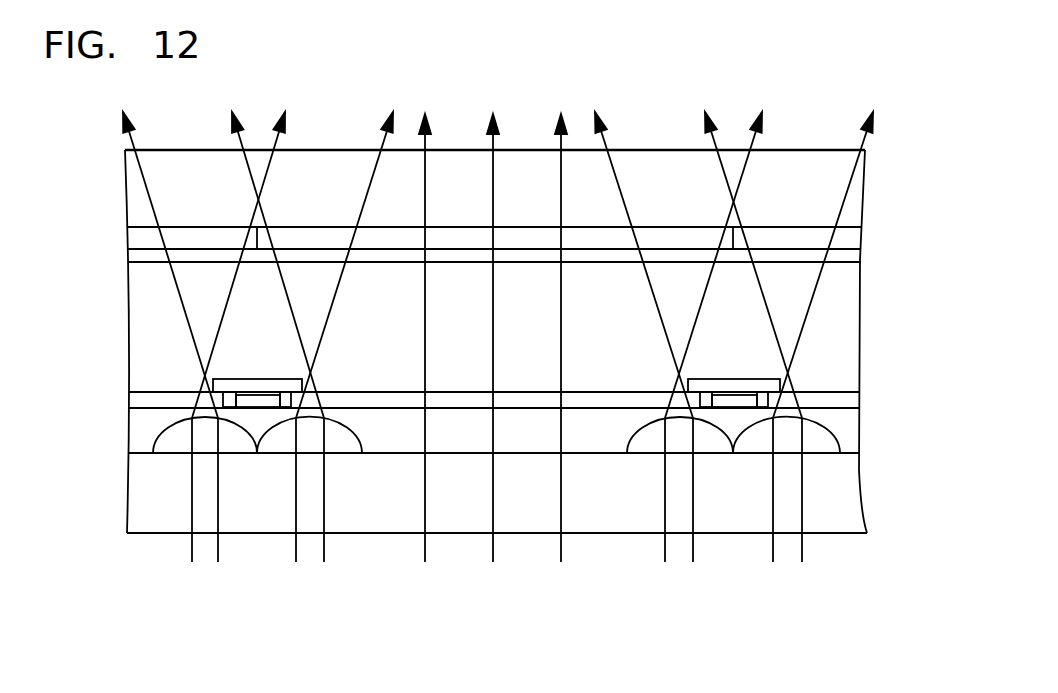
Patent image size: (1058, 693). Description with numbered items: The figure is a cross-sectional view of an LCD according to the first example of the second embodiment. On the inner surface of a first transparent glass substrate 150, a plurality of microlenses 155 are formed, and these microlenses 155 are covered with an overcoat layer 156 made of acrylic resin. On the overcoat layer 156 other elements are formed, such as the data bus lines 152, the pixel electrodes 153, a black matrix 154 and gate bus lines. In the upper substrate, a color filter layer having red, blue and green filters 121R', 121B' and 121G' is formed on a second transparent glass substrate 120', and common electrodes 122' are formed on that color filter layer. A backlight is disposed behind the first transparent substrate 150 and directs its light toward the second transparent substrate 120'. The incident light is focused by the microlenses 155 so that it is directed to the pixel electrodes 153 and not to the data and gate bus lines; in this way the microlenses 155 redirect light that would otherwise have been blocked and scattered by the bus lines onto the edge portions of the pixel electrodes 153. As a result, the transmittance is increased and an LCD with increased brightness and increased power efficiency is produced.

The second transparent glass substrate 120' is at (495, 131).
The red filter 121R' is at (150, 217).
The green filter 121G' is at (495, 159).
The blue filter 121B' is at (846, 194).
The common electrodes 122' is at (534, 284).
The first transparent glass substrate 150 is at (177, 520).
The data bus lines 152 is at (252, 397).
The pixel electrodes 153 is at (368, 400).
The black matrix 154 is at (733, 388).
The microlenses 155 is at (653, 440).
The overcoat layer 156 is at (142, 427).